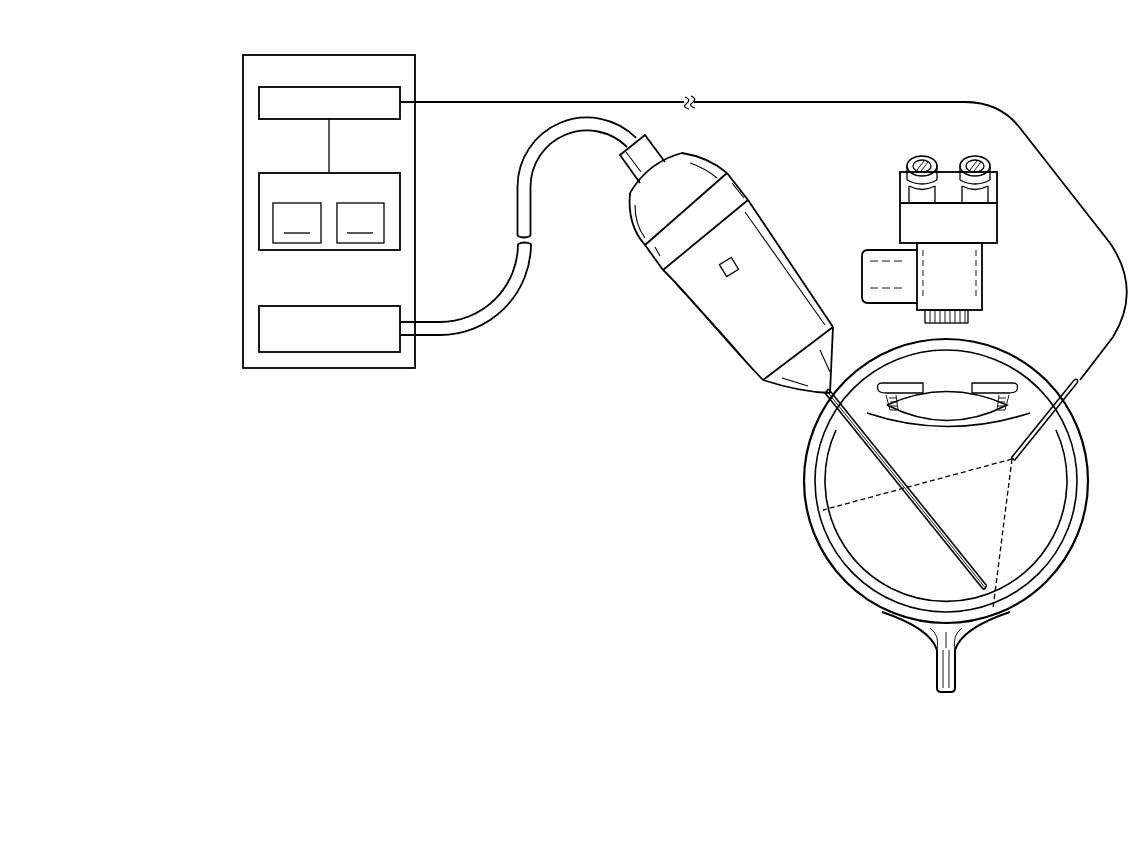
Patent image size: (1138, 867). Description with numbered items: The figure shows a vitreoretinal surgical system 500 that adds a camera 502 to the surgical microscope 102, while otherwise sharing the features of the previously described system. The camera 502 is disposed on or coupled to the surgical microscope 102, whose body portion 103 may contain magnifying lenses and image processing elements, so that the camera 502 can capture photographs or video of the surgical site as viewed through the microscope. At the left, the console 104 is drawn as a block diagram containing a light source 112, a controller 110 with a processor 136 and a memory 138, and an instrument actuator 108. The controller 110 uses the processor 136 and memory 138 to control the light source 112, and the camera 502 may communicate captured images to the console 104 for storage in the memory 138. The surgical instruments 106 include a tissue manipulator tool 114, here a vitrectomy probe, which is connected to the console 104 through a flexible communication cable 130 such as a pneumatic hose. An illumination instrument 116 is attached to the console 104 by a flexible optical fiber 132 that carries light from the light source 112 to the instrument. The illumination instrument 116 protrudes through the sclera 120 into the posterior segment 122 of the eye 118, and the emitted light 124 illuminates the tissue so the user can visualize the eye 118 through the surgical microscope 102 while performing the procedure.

The vitreoretinal surgical system 500 is at (1026, 87).
The console 104 is at (327, 368).
The light source 112 is at (300, 121).
The controller 110 is at (329, 236).
The processor 136 is at (297, 223).
The memory 138 is at (360, 223).
The instrument actuator 108 is at (378, 302).
The communication cable 130 is at (517, 215).
The surgical instruments 106 is at (803, 362).
The tissue manipulator tool 114 is at (780, 258).
The surgical microscope 102 is at (932, 239).
The body portion 103 is at (985, 277).
The camera 502 is at (886, 199).
The optical fiber 132 is at (1068, 189).
The illumination instrument 116 is at (1074, 394).
The eye 118 is at (1057, 590).
The sclera 120 is at (931, 515).
The posterior segment 122 is at (838, 483).
The emitted light 124 is at (945, 473).